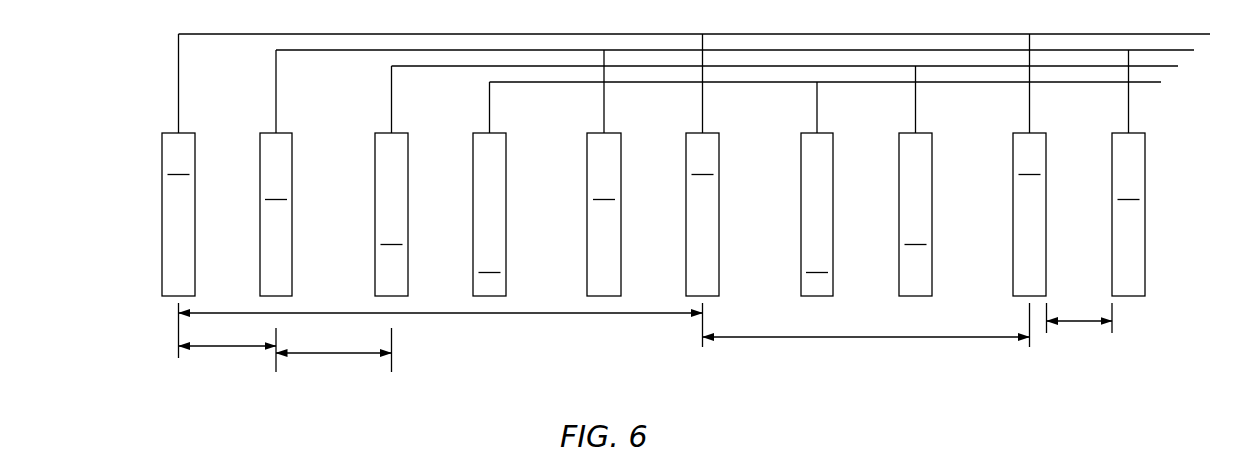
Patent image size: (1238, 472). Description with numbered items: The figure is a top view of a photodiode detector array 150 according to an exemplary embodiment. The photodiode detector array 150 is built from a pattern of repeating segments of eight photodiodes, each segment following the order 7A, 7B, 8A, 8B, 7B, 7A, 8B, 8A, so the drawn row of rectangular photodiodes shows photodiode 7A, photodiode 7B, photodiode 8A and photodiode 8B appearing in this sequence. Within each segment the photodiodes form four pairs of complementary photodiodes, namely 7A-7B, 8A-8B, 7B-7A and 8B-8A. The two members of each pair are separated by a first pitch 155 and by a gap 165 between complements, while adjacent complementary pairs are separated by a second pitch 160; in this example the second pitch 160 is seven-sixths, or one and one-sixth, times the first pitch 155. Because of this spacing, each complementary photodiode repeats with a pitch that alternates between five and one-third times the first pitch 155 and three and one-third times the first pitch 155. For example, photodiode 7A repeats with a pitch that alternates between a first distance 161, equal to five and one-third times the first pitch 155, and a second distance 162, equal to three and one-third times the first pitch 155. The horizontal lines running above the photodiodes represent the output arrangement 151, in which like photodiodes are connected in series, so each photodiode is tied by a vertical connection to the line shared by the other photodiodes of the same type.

The photodiode 7A is at (560, 165).
The photodiode 7B is at (702, 173).
The photodiode 8A is at (653, 181).
The photodiode 8B is at (653, 189).
The photodiode detector array 150 is at (138, 168).
The output arrangement 151 is at (150, 88).
The first pitch 155 is at (228, 356).
The second pitch 160 is at (340, 362).
The first distance 161 is at (449, 322).
The second distance 162 is at (872, 346).
The gap 165 is at (1083, 330).